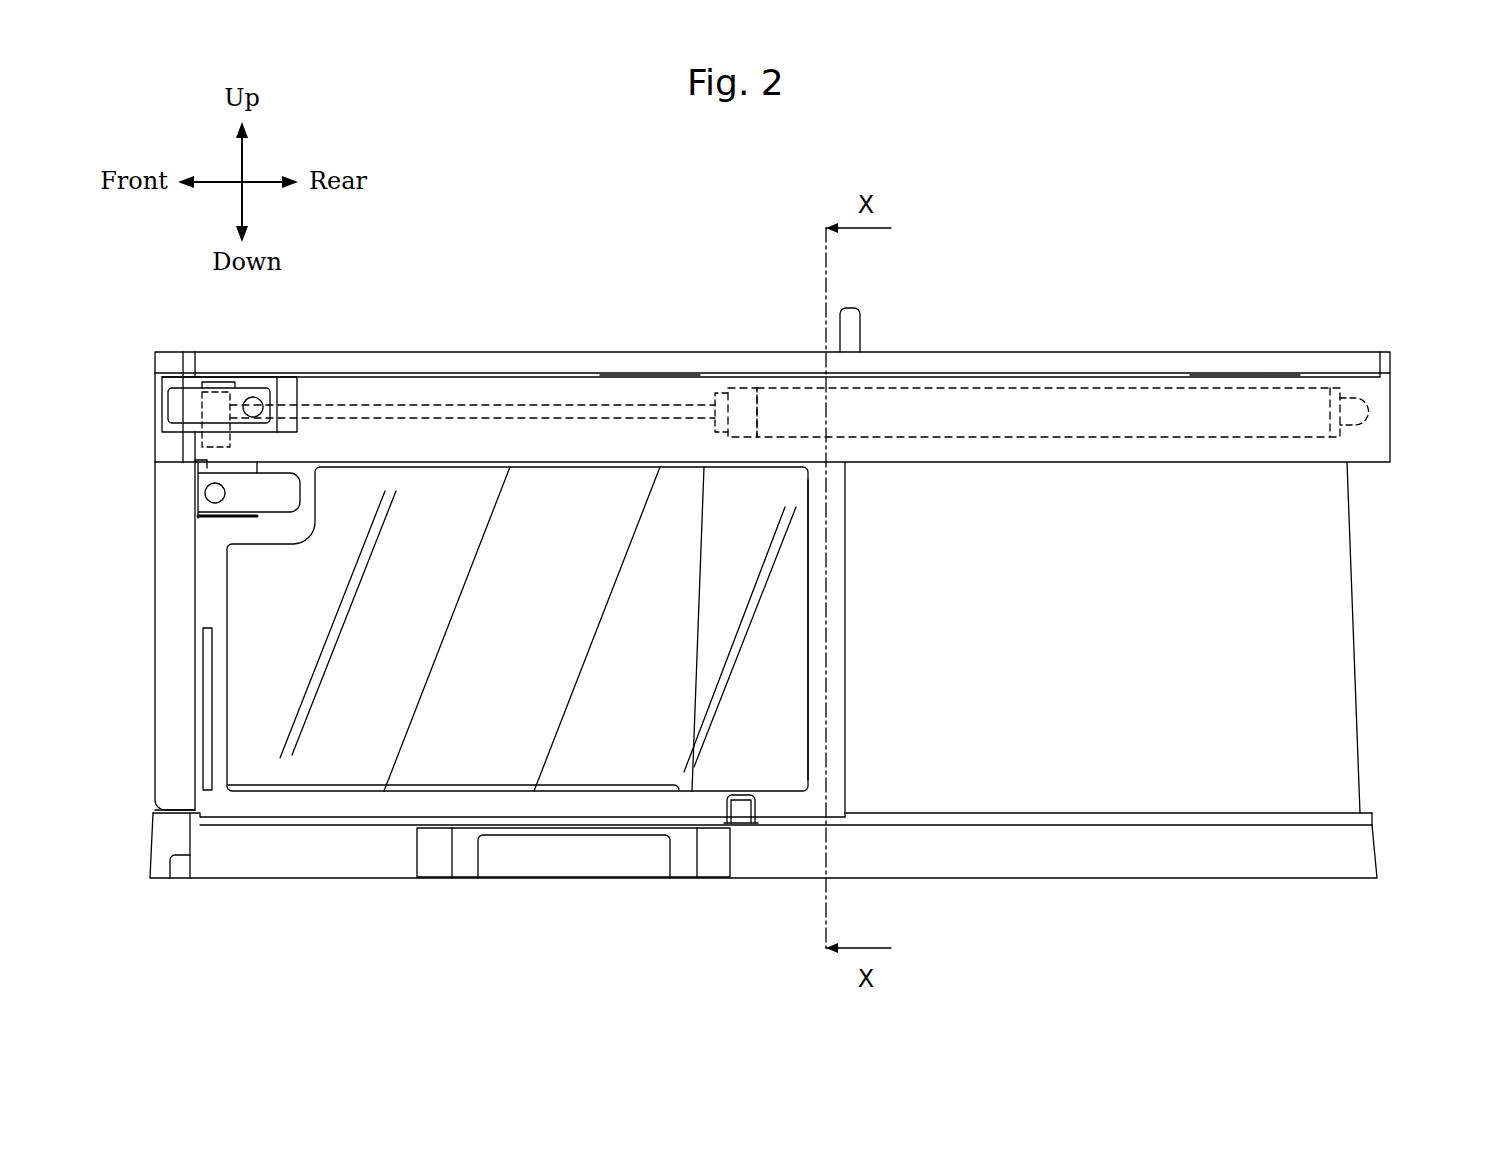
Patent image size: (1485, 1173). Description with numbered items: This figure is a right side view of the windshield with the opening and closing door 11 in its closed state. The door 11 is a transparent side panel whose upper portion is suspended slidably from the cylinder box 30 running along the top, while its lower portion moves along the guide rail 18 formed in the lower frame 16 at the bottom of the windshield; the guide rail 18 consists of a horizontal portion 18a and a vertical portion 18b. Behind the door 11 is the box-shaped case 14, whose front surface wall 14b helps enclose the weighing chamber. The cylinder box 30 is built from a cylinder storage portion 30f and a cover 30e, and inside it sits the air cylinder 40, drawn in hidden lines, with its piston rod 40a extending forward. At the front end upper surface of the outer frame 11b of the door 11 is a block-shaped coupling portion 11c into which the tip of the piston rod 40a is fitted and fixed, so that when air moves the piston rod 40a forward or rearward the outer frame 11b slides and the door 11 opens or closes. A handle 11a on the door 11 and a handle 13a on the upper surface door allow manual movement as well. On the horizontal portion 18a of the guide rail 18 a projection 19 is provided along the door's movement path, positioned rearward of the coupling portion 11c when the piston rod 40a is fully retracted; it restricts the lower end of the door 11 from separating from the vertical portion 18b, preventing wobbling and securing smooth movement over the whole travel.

The opening and closing door 11 is at (294, 595).
The handle 11a is at (208, 784).
The outer frame 11b is at (838, 728).
The coupling portion 11c is at (243, 378).
The handle 13a is at (853, 325).
The case 14 is at (1310, 623).
The front surface wall 14b is at (697, 679).
The lower frame 16 is at (1198, 858).
The guide rail 18 is at (833, 785).
The horizontal portion 18a is at (1360, 825).
The vertical portion 18b is at (1327, 817).
The projection 19 is at (745, 815).
The cylinder box 30 is at (1280, 383).
The cover 30e is at (1197, 370).
The cylinder storage portion 30f is at (648, 388).
The air cylinder 40 is at (998, 385).
The piston rod 40a is at (515, 405).